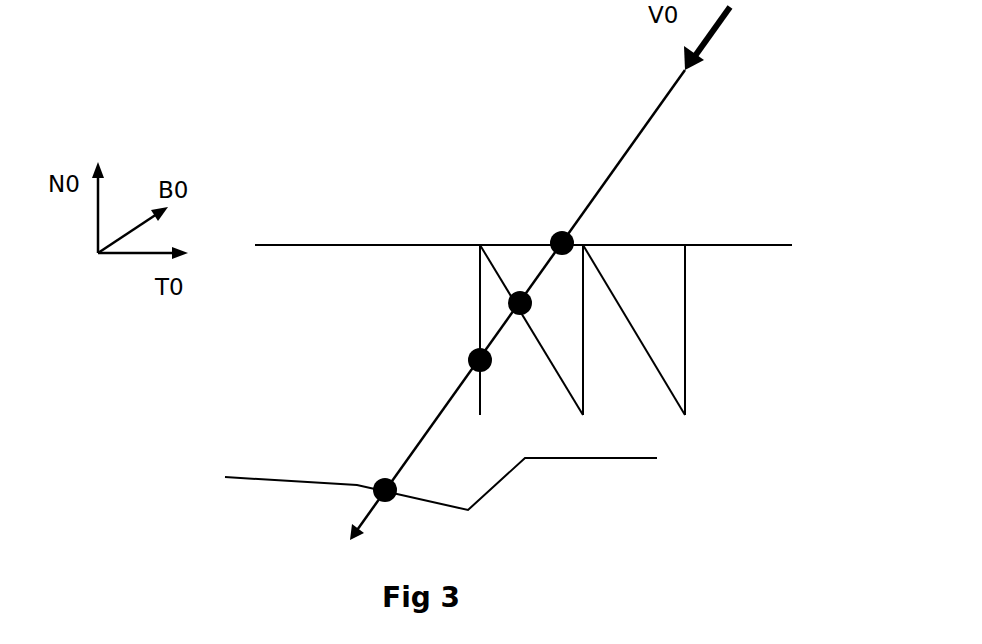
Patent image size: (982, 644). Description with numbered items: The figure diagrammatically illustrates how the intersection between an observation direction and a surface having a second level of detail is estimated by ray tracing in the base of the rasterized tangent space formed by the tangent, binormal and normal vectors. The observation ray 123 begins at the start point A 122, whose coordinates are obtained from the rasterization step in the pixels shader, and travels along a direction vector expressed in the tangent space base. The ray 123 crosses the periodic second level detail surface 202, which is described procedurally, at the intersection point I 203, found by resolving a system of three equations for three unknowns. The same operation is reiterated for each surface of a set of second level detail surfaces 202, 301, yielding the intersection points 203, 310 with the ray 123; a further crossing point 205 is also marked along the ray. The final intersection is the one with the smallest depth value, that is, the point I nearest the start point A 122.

The observation ray 123 is at (633, 140).
The start point A 122 is at (553, 232).
The intersection point I 203 is at (510, 297).
The intersection point with structure facet 205 is at (473, 355).
The second level detail surface 202 is at (685, 300).
The second level detail surface 301 is at (275, 478).
The intersection point 310 is at (378, 478).